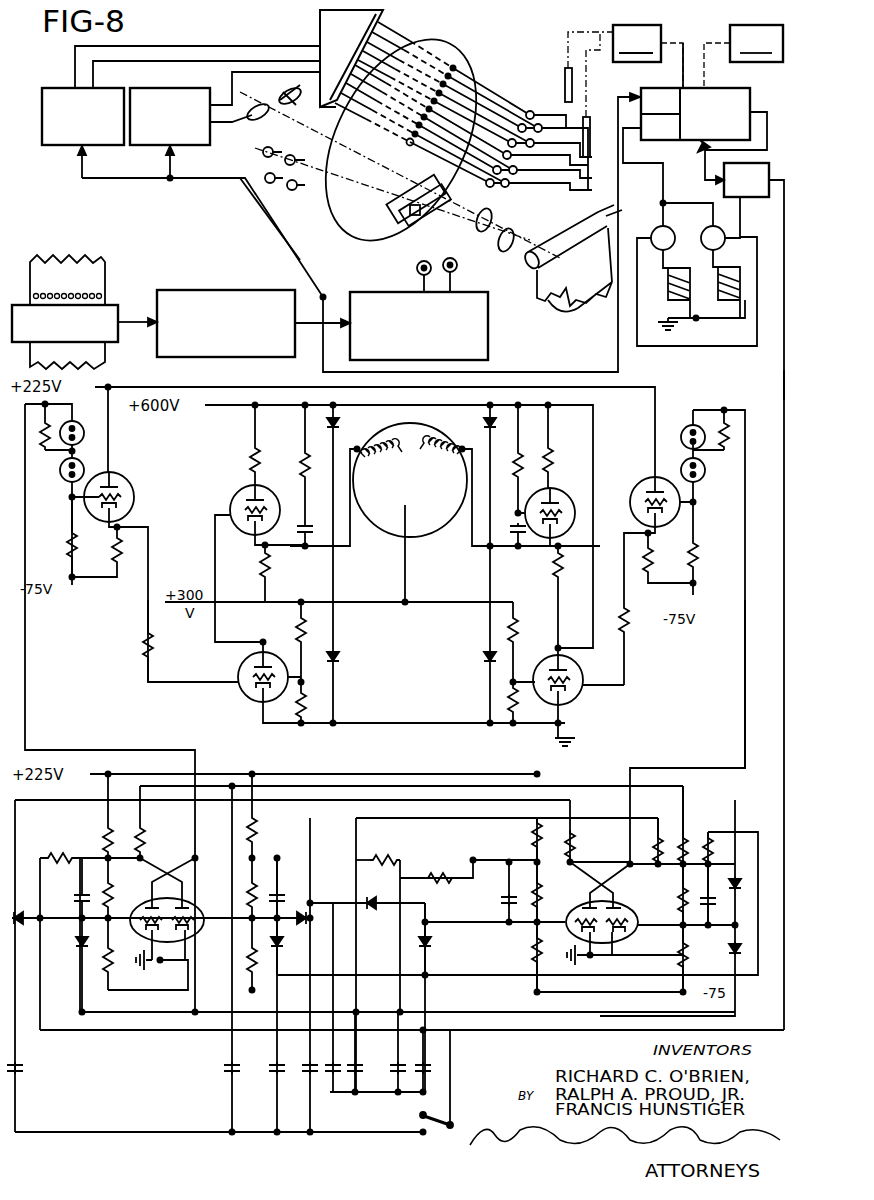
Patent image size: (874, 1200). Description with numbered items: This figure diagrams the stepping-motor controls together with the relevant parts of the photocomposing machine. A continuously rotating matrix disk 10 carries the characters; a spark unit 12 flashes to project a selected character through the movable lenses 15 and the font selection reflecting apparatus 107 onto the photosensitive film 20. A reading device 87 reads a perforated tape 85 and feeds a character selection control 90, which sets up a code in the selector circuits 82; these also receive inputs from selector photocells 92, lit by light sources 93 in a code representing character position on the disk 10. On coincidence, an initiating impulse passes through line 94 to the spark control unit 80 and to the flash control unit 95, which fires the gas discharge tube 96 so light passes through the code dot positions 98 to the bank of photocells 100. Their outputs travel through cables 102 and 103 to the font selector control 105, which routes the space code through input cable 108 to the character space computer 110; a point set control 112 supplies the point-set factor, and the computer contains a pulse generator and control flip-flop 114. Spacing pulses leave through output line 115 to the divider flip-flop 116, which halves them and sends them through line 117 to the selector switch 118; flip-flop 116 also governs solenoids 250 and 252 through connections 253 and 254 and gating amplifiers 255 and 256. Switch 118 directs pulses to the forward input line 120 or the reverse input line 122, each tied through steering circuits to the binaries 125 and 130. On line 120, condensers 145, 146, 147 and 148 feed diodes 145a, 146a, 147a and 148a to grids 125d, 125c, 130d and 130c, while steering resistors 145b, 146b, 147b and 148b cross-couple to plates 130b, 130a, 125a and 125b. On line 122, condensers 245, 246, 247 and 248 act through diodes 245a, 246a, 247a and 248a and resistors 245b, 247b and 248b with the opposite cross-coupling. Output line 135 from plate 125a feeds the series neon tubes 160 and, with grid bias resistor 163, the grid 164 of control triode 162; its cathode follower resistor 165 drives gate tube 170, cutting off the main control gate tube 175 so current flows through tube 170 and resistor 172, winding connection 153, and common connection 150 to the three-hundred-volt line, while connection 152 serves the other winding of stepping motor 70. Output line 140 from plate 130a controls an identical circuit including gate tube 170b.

The matrix disk 10 is at (448, 56).
The spark unit 12 is at (274, 114).
The movable lenses 15 is at (508, 232).
The photosensitive material 20 is at (562, 312).
The stepping motor 70 is at (428, 540).
The spark control unit 80 is at (188, 138).
The selector circuits 82 is at (474, 320).
The perforated tape 85 is at (66, 280).
The reading device 87 is at (110, 312).
The character selection control 90 is at (228, 292).
The selector photocells 92 is at (414, 276).
The light sources 93 is at (295, 165).
The line 94 is at (260, 205).
The flash control unit 95 is at (55, 136).
The gas discharge tube 96 is at (383, 22).
The code dot positions 98 is at (466, 62).
The bank of photocells 100 is at (530, 108).
The cable 102 is at (583, 70).
The cable 103 is at (565, 75).
The font selector control 105 is at (648, 56).
The font selection reflecting apparatus 107 is at (400, 190).
The input cable 108 is at (677, 38).
The character space computer 110 is at (717, 148).
The point set control 112 is at (743, 56).
The control flip-flop 114 is at (650, 88).
The output line 115 is at (756, 104).
The divider flip-flop 116 is at (766, 165).
The line 117 is at (784, 380).
The selector switch 118 is at (435, 1140).
The input circuit line 120 is at (418, 1108).
The input circuit line 122 is at (340, 1133).
The binary 125 is at (165, 972).
The plate 125a is at (133, 876).
The plate 125b is at (192, 902).
The grid 125c is at (140, 942).
The grid 125d is at (194, 935).
The binary 130 is at (600, 965).
The plate 130a is at (580, 905).
The plate 130b is at (618, 905).
The grid 130c is at (537, 935).
The grid 130d is at (651, 960).
The output line 135 is at (168, 770).
The output line 140 is at (735, 765).
The condenser 145 is at (326, 1076).
The diode 145a is at (295, 930).
The resistor 145b is at (440, 876).
The condenser 146 is at (358, 1070).
The diode 146a is at (78, 944).
The resistor 146b is at (664, 838).
The condenser 147 is at (392, 1068).
The diode 147a is at (735, 948).
The resistor 147b is at (384, 856).
The input condenser 148 is at (430, 1068).
The diode 148a is at (430, 942).
The resistor 148b is at (62, 856).
The common stator winding connection 150 is at (403, 510).
The connection 152 is at (357, 449).
The connection 153 is at (462, 449).
The neon tubes 160 is at (56, 456).
The control triode 162 is at (124, 480).
The grid bias resistor 163 is at (70, 545).
The grid 164 is at (132, 505).
The resistor 165 is at (145, 640).
The gate tube 170 is at (242, 692).
The gate tube 170b is at (577, 693).
The resistor 172 is at (268, 570).
The main control gate tube 175 is at (233, 496).
The condenser 245 is at (270, 1068).
The diode 245a is at (258, 891).
The resistor 245b is at (708, 838).
The condenser 246 is at (25, 1068).
The diode 246a is at (26, 906).
The condenser 247 is at (225, 1068).
The diode 247a is at (742, 870).
The resistor 247b is at (142, 842).
The condenser 248 is at (302, 1068).
The diode 248a is at (378, 912).
The resistor 248b is at (310, 860).
The solenoid 250 is at (668, 290).
The solenoid 252 is at (745, 285).
The connection 253 is at (688, 346).
The connection 254 is at (735, 213).
The gating amplifier 255 is at (655, 228).
The gating amplifier 256 is at (683, 284).